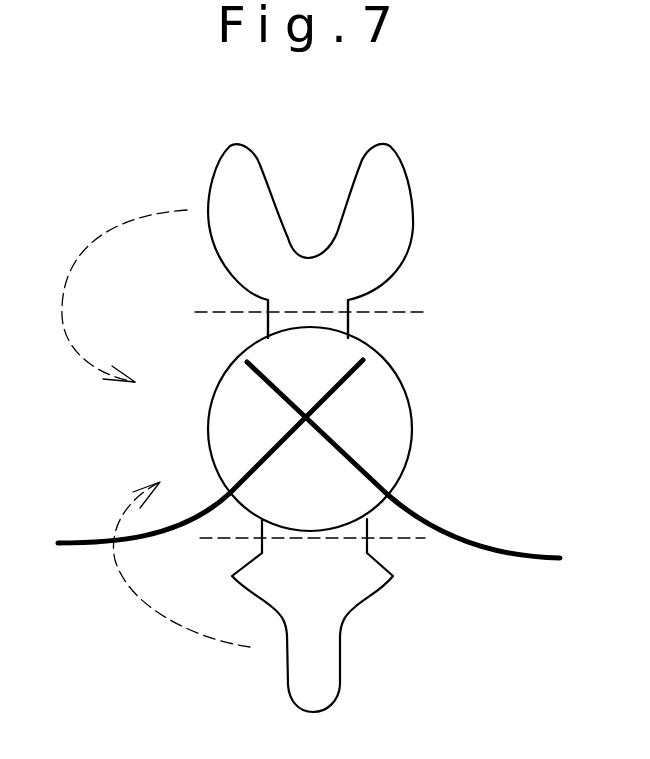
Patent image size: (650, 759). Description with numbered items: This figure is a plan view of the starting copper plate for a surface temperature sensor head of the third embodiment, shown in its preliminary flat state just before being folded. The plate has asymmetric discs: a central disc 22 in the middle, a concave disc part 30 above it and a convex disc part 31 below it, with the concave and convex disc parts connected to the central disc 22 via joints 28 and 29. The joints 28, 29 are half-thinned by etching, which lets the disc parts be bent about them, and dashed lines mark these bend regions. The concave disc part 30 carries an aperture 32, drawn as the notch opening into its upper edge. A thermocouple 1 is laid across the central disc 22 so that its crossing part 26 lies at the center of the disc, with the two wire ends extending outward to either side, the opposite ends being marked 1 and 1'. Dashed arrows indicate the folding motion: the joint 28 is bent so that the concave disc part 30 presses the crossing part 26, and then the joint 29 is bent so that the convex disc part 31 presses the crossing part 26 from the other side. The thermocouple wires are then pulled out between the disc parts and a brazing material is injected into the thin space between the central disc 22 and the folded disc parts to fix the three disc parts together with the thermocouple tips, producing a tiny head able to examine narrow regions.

The thermocouple 1 is at (142, 540).
The string end 1' is at (474, 543).
The central disc 22 is at (398, 428).
The crossing part 26 is at (307, 418).
The joint 28 is at (330, 322).
The joint 29 is at (337, 543).
The concave disc part 30 is at (360, 252).
The convex disc part 31 is at (313, 655).
The aperture 32 is at (299, 167).